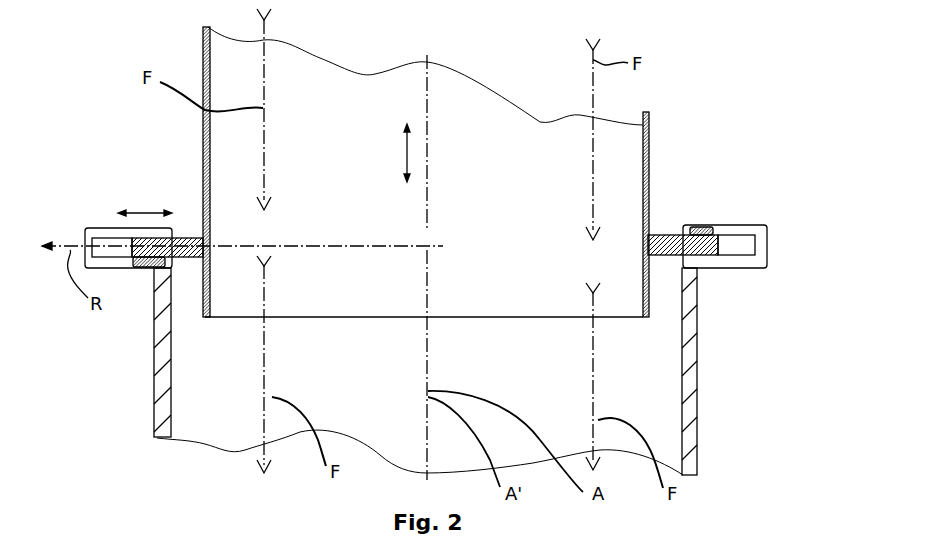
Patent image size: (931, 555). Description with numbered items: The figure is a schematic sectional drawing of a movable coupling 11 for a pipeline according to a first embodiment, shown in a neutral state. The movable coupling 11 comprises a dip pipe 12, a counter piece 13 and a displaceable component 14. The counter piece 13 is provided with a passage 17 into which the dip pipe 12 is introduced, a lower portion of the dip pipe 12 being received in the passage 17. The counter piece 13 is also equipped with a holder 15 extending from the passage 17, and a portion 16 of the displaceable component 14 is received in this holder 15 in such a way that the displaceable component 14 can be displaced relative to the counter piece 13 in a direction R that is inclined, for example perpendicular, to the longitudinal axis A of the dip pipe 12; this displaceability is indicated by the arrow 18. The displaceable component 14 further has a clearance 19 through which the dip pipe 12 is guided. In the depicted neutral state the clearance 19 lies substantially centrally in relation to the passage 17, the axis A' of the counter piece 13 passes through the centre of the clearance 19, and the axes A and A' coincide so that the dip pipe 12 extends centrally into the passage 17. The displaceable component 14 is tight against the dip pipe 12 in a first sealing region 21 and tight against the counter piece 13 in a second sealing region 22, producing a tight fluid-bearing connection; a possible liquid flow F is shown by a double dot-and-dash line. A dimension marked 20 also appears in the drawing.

The movable coupling 11 is at (149, 169).
The dip pipe 12 is at (647, 157).
The counter piece 13 is at (690, 428).
The displaceable component 14 is at (665, 233).
The holder 15 is at (770, 243).
The portion of the displaceable component 16 is at (147, 268).
The passage 17 is at (563, 365).
The arrow 18 is at (145, 212).
The clearance 19 is at (203, 255).
The gap 20 is at (407, 150).
The first sealing region 21 is at (638, 242).
The second sealing region 22 is at (707, 262).